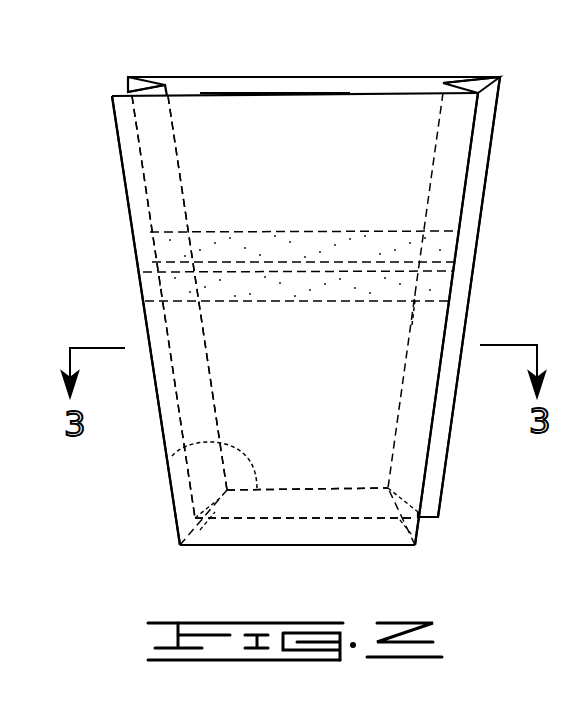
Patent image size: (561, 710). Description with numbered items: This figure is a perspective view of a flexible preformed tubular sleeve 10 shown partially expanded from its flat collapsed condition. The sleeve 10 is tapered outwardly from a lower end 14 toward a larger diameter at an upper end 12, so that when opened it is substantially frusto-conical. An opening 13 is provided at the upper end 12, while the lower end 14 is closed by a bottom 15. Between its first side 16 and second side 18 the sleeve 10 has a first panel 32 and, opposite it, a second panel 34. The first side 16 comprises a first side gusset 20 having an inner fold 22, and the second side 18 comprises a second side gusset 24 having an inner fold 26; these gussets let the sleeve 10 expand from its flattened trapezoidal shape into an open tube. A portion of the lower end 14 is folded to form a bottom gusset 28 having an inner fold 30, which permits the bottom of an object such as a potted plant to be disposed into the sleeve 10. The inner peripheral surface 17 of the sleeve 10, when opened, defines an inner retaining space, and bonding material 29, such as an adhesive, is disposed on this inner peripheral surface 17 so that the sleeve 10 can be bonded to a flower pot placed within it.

The flexible preformed tubular sleeve 10 is at (480, 458).
The upper end 12 is at (350, 73).
The opening 13 is at (283, 83).
The lower end 14 is at (233, 547).
The bottom 15 is at (312, 505).
The first side 16 is at (132, 233).
The inner peripheral surface 17 is at (400, 85).
The second side 18 is at (480, 217).
The first side gusset 20 is at (128, 87).
The inner fold 22 is at (178, 183).
The second side gusset 24 is at (482, 128).
The inner fold 26 is at (412, 325).
The bottom gusset 28 is at (418, 528).
The bonding material 29 is at (443, 243).
The inner fold 30 is at (183, 452).
The first panel 32 is at (195, 143).
The second panel 34 is at (240, 77).